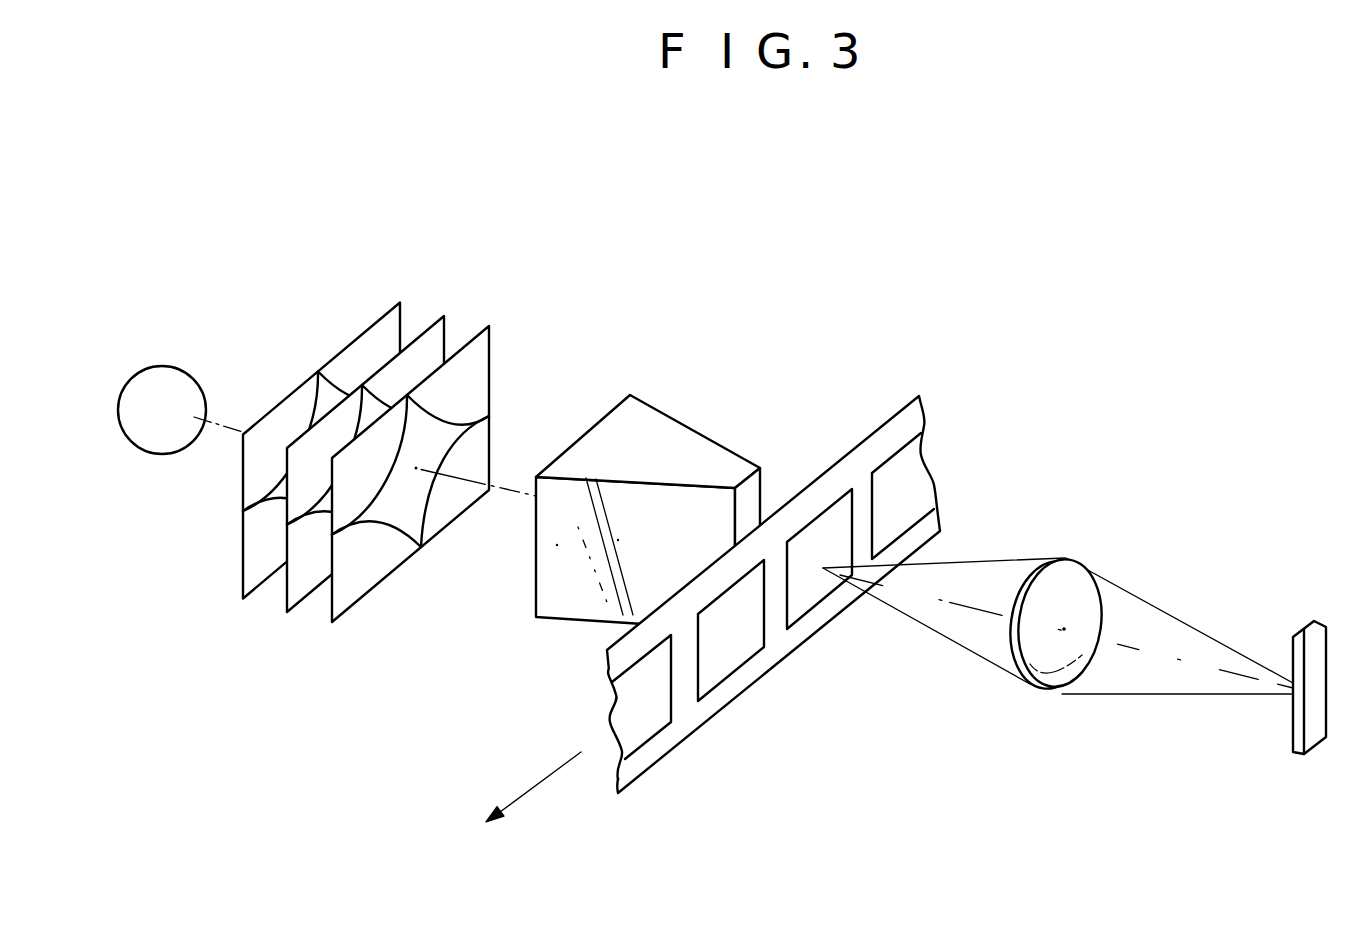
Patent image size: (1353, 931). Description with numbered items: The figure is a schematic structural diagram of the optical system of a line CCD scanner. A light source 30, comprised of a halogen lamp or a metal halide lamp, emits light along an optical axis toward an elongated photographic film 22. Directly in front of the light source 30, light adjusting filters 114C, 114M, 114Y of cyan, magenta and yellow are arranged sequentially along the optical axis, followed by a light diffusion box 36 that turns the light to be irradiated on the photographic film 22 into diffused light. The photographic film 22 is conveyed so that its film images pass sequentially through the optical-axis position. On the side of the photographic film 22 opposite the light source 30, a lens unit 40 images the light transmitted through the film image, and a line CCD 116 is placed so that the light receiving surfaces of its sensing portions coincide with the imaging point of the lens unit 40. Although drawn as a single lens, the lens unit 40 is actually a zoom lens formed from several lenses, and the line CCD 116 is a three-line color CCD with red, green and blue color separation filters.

The light source 30 is at (178, 367).
The light adjusting filter of cyan 114C is at (257, 597).
The light adjusting filter of magenta 114M is at (306, 607).
The light adjusting filter of yellow 114Y is at (350, 607).
The light diffusion box 36 is at (712, 440).
The photographic film 22 is at (883, 418).
The lens unit 40 is at (1092, 522).
The line CCD 116 is at (1321, 748).